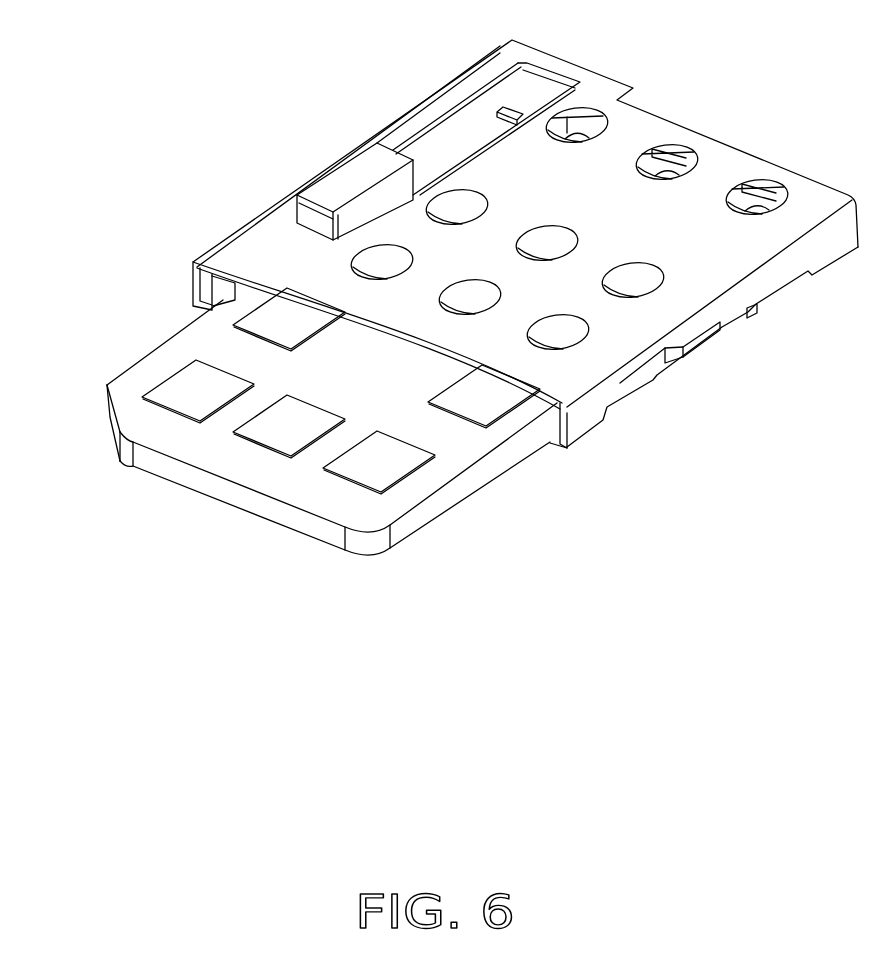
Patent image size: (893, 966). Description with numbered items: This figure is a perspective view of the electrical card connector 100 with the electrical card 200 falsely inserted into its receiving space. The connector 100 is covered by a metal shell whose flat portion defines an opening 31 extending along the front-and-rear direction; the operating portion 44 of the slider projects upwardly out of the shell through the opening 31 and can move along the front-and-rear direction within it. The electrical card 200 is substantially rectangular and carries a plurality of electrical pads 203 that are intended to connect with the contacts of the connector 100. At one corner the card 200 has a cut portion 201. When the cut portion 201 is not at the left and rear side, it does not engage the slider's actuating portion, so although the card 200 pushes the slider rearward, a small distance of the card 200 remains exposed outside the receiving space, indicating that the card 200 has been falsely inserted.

The electrical card connector 100 is at (740, 252).
The opening 31 is at (517, 100).
The operating portion 44 is at (355, 178).
The electrical card 200 is at (292, 482).
The cut portion 201 is at (110, 420).
The electrical pads 203 is at (390, 462).